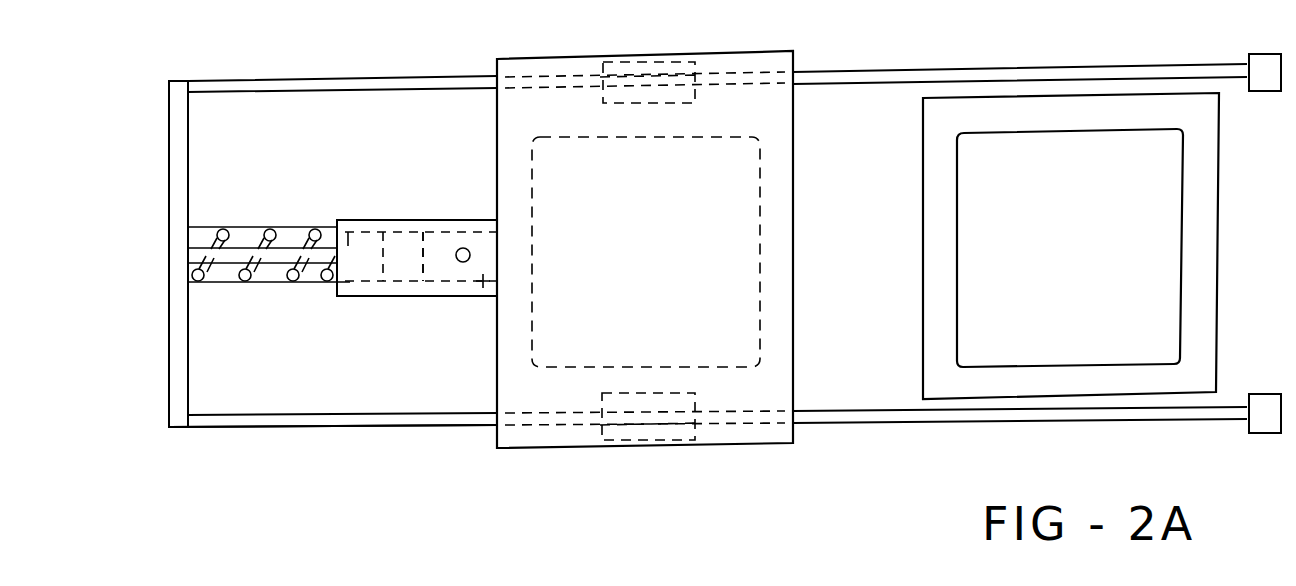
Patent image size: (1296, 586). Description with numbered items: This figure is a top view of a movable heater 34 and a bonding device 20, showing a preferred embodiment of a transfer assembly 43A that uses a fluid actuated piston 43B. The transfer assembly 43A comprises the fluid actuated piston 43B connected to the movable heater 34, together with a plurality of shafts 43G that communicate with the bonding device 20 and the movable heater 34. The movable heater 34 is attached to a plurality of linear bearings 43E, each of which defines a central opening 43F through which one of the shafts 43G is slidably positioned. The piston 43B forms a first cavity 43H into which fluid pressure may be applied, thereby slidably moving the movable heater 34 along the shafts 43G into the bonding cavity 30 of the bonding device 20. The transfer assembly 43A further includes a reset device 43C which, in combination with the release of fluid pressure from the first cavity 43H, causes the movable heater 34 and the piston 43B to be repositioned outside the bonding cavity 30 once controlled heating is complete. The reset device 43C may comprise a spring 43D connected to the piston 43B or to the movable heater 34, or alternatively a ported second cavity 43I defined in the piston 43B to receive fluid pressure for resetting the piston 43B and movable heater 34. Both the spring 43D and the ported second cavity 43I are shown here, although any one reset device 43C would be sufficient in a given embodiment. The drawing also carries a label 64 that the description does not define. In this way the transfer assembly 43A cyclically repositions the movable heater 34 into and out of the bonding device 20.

The bonding device 20 is at (919, 361).
The bonding cavity 30 is at (953, 290).
The movable heater 34 is at (538, 24).
The transfer assembly 43A is at (271, 446).
The fluid actuated piston 43B is at (370, 218).
The reset device 43C is at (464, 240).
The spring 43D is at (267, 225).
The linear bearings 43E is at (663, 100).
The central opening 43F is at (647, 75).
The shafts 43G is at (387, 47).
The first cavity 43H is at (352, 235).
The ported second cavity 43I is at (488, 273).
The slot 64 is at (427, 233).